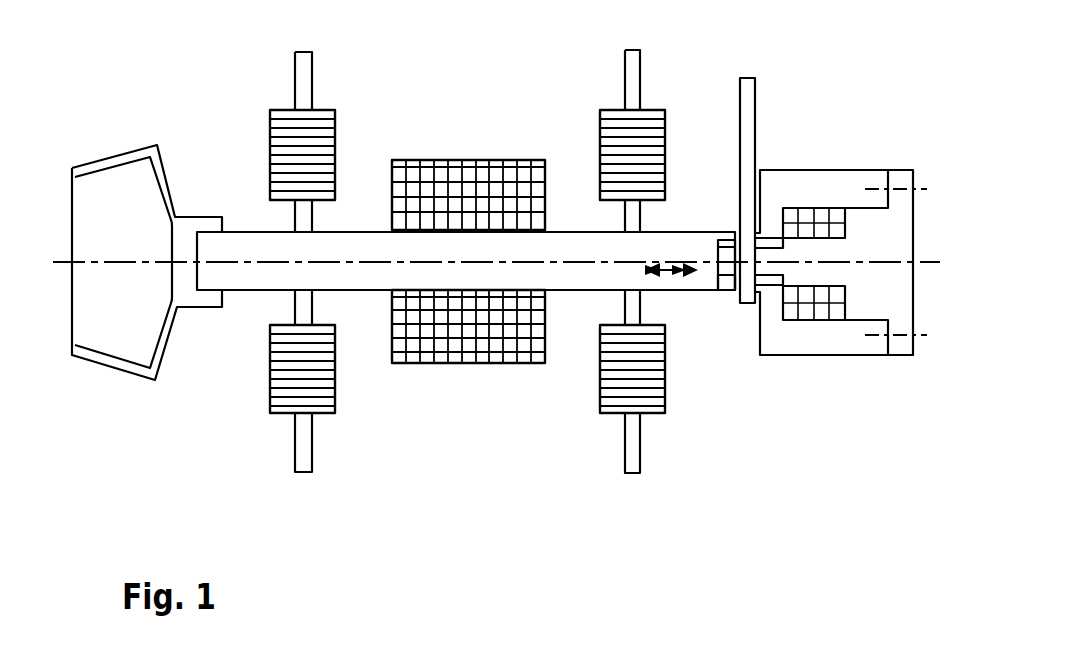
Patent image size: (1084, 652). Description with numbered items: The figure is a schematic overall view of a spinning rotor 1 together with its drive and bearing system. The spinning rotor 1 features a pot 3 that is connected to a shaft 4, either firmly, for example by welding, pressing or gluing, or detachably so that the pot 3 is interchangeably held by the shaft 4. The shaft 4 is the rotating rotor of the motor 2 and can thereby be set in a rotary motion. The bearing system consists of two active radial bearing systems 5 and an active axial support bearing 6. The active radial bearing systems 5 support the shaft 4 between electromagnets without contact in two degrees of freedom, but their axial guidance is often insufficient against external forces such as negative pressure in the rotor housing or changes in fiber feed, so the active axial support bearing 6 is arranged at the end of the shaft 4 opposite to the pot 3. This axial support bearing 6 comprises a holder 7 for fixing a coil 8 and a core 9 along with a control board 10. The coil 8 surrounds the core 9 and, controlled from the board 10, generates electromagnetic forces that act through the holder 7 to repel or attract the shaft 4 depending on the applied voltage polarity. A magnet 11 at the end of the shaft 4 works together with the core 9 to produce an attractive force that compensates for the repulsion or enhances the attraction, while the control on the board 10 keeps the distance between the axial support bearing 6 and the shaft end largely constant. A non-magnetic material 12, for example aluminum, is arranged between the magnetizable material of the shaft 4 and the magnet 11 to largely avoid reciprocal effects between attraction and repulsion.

The spinning rotor 1 is at (500, 281).
The motor 2 is at (445, 160).
The pot 3 is at (105, 157).
The shaft 4 is at (248, 280).
The active radial bearing systems 5 is at (333, 432).
The active axial support bearing 6 is at (851, 294).
The holder 7 is at (780, 188).
The coil 8 is at (805, 302).
The core 9 is at (907, 295).
The control board 10 is at (742, 105).
The magnet 11 is at (727, 262).
The non-magnetic material 12 is at (727, 287).